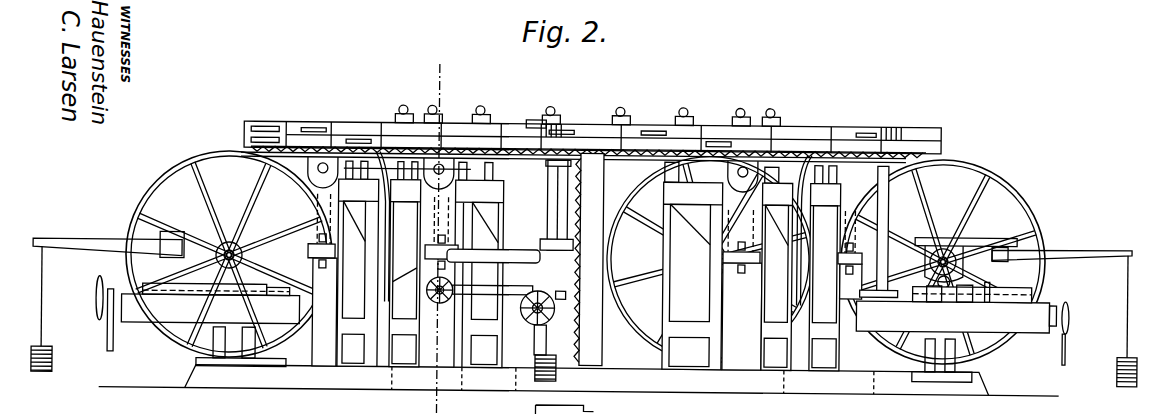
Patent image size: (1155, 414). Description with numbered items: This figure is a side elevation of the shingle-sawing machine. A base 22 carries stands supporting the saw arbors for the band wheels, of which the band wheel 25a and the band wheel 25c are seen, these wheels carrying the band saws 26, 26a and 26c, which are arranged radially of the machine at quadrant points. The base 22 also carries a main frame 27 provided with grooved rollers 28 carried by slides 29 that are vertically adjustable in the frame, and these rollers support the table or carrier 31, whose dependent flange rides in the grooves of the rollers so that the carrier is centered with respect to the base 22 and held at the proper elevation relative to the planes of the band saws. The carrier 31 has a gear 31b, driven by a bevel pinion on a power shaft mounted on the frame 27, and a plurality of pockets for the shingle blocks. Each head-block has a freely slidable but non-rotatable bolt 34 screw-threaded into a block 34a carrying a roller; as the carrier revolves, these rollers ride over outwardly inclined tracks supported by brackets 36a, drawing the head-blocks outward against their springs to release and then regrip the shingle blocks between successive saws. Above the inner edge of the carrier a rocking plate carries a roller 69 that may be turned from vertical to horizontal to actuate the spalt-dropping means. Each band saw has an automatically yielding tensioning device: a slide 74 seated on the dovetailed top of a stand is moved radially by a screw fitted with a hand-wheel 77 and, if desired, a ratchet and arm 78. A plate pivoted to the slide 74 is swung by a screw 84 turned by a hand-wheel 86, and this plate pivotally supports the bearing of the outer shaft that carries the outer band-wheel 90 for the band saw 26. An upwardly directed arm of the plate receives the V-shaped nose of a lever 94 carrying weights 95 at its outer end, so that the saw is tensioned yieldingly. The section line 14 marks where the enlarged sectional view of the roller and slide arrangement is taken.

The section line 14— 14 is at (446, 85).
The base 22 is at (333, 387).
The band wheel 25a is at (549, 190).
The band wheel 25c is at (710, 260).
The band saw 26 is at (600, 355).
The band saw 26a is at (283, 360).
The band saw 26c is at (893, 361).
The main frame 27 is at (427, 368).
The grooved roller 28 is at (845, 203).
The slide 29 is at (858, 202).
The table or carrier 31 is at (383, 121).
The gear 31b is at (616, 150).
The bolt 34 is at (588, 139).
The block 34a is at (532, 121).
The bracket 36a is at (381, 180).
The roller 69 is at (433, 109).
The slide 74 is at (157, 294).
The hand-wheel 77 is at (97, 314).
The ratchet and arm 78 is at (108, 342).
The screw 84 is at (947, 286).
The hand-wheel 86 is at (440, 301).
The outer band-wheel 90 is at (136, 212).
The lever 94 is at (78, 240).
The weight 95 is at (53, 372).